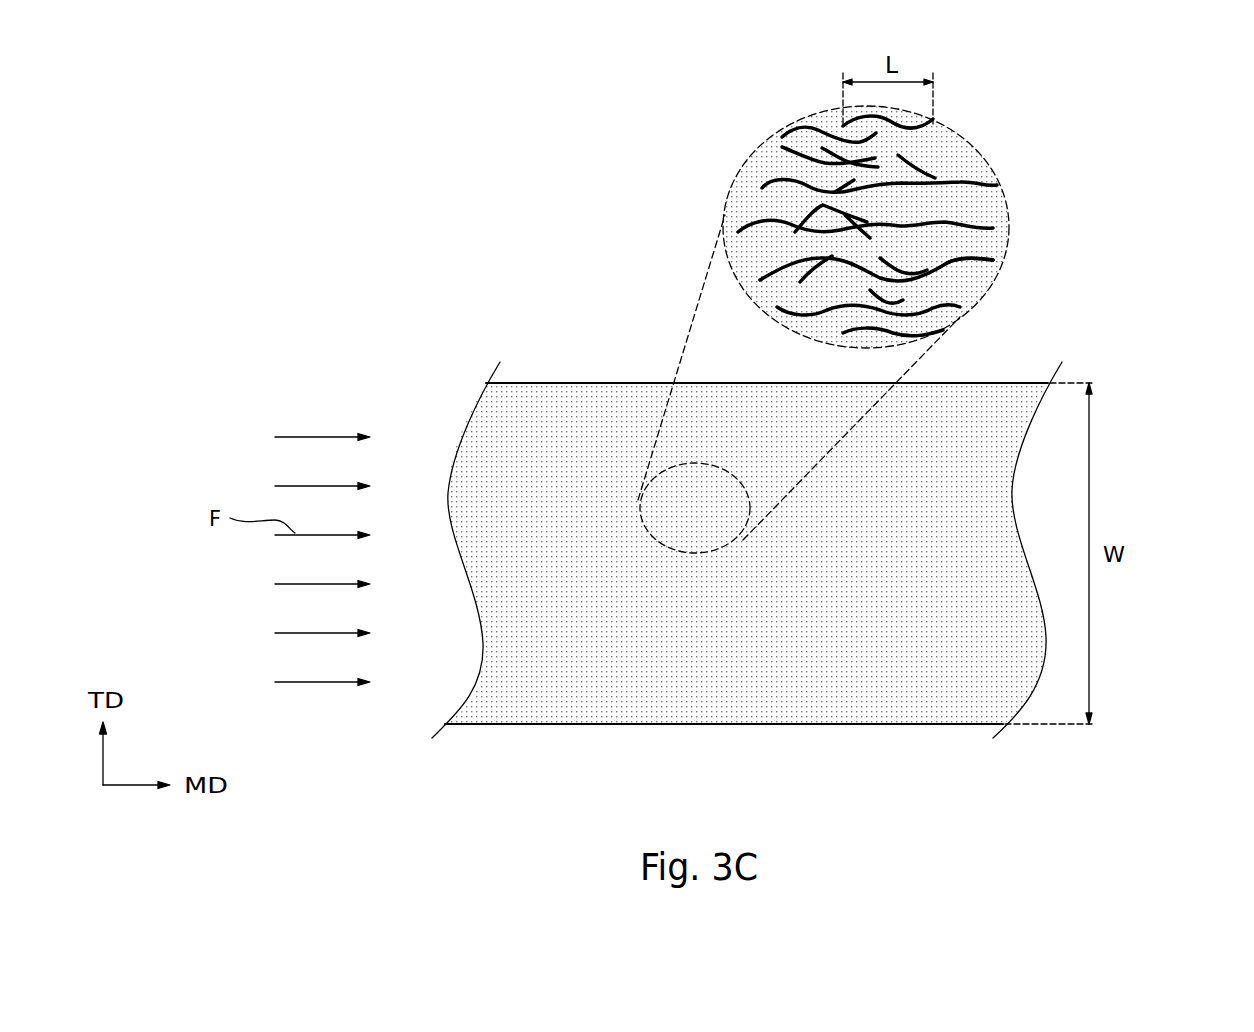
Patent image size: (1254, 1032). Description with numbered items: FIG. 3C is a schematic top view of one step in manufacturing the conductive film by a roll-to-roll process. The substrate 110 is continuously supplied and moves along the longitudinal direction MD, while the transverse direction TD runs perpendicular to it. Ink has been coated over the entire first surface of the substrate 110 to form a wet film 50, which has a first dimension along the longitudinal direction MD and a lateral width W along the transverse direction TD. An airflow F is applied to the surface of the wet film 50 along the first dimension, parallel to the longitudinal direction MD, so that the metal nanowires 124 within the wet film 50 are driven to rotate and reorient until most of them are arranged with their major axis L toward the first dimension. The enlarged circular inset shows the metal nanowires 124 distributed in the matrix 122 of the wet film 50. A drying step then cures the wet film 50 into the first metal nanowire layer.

The substrate 110 is at (940, 724).
The wet film 50 is at (1128, 107).
The metal nanowires 124 is at (947, 165).
The matrix 122 is at (980, 196).